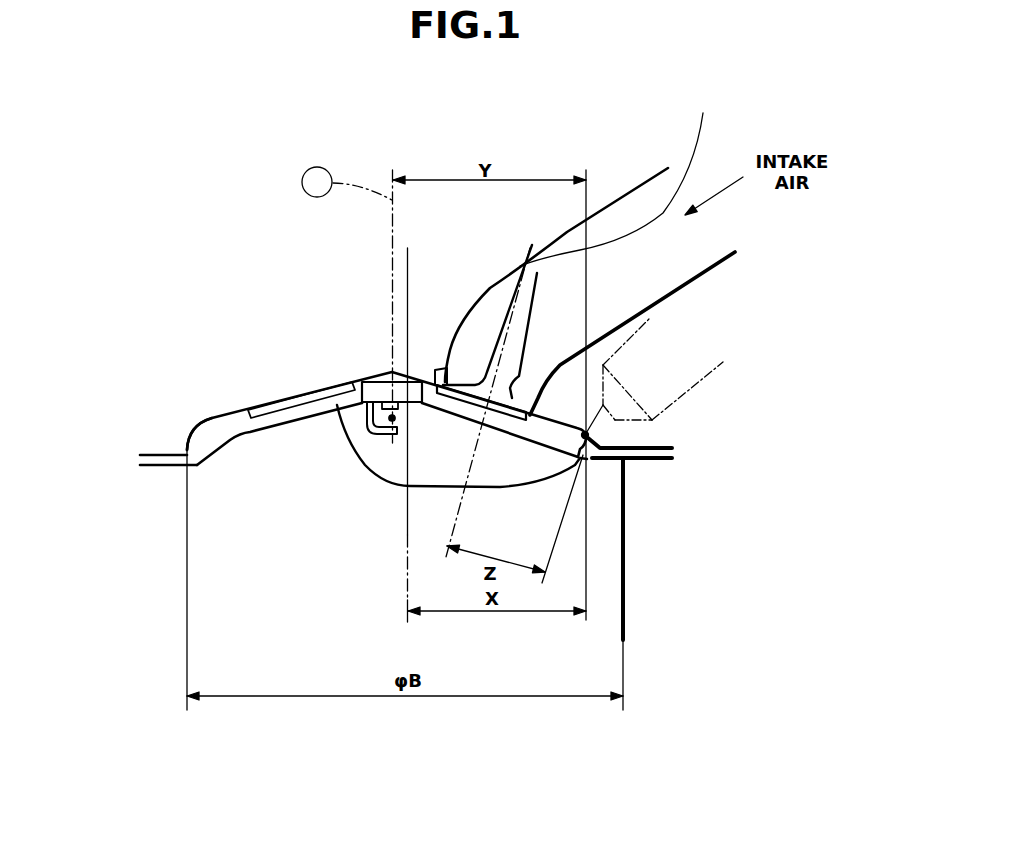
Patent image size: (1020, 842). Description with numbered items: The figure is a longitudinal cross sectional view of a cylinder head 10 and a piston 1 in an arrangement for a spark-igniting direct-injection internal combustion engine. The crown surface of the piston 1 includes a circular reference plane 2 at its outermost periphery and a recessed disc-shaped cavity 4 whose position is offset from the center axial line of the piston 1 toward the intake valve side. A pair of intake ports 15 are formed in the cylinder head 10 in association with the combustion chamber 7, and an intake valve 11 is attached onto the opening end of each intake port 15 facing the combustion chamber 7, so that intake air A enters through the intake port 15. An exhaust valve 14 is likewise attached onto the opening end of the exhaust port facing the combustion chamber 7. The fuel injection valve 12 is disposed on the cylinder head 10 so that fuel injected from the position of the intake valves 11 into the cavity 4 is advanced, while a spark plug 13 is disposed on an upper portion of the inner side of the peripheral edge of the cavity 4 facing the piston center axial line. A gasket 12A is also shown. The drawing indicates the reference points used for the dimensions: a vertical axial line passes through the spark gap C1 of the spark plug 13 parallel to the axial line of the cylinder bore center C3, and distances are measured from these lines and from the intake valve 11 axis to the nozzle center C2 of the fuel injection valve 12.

The piston 1 is at (205, 512).
The reference plane 2 is at (620, 174).
The cavity 4 is at (498, 490).
The combustion chamber 7 is at (200, 438).
The cylinder head 10 is at (218, 405).
The intake valve 11 is at (522, 395).
The fuel injection valve 12 is at (725, 362).
The gasket 12A is at (140, 458).
The spark plug 13 is at (377, 390).
The exhaust valve 14 is at (290, 393).
The intake port 15 is at (637, 212).
The intake air A is at (738, 245).
The spark gap C1 is at (392, 418).
The nozzle center C2 is at (585, 435).
The cylinder bore center C3 is at (410, 535).